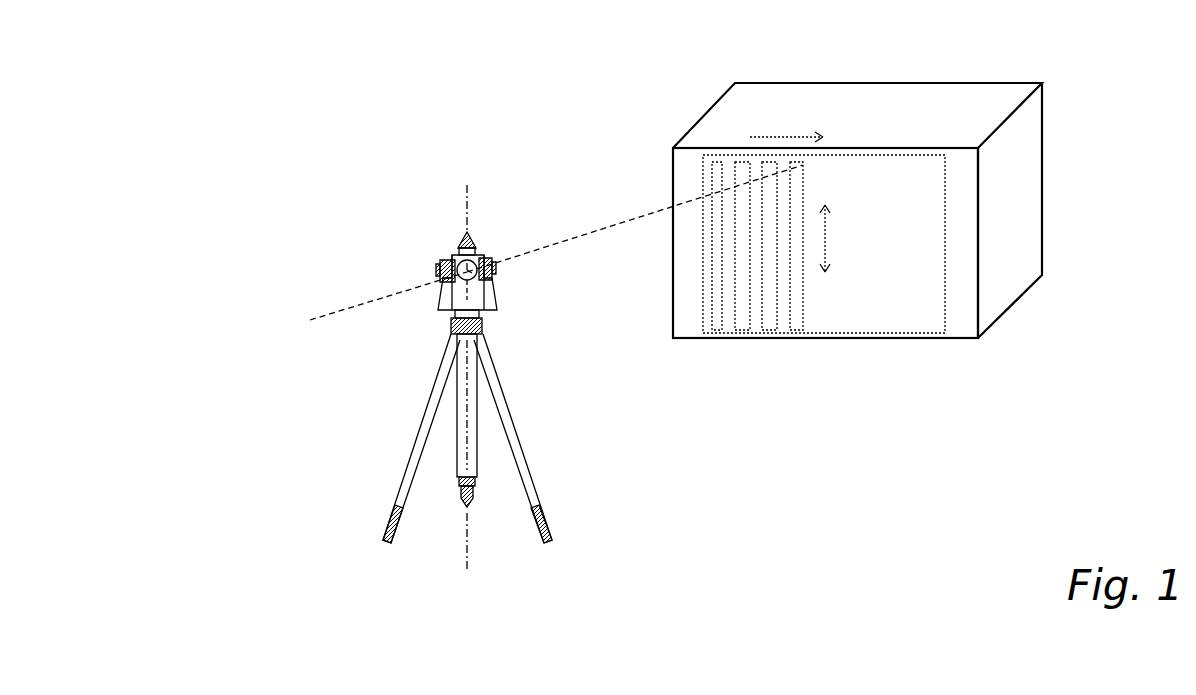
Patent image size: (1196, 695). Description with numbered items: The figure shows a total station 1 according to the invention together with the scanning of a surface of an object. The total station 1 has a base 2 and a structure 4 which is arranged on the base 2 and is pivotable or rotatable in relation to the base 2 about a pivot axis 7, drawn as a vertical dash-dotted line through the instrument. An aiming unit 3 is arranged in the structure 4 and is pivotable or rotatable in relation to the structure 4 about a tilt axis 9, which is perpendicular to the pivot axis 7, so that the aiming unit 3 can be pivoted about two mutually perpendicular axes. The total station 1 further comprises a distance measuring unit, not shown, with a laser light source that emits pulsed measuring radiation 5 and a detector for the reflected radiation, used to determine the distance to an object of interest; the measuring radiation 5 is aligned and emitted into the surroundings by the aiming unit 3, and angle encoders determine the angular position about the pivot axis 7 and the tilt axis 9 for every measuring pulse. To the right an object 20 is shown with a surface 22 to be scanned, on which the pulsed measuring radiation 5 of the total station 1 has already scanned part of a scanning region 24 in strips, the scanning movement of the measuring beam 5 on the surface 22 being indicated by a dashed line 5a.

The total station 1 is at (430, 235).
The base 2 is at (485, 327).
The aiming unit 3 is at (447, 283).
The structure 4 is at (480, 288).
The measuring radiation 5 is at (610, 213).
The dashed line 5a is at (803, 350).
The pivot axis 7 is at (457, 188).
The tilt axis 9 is at (313, 285).
The object 20 is at (930, 45).
The surface 22 is at (953, 307).
The scanning region 24 is at (860, 315).